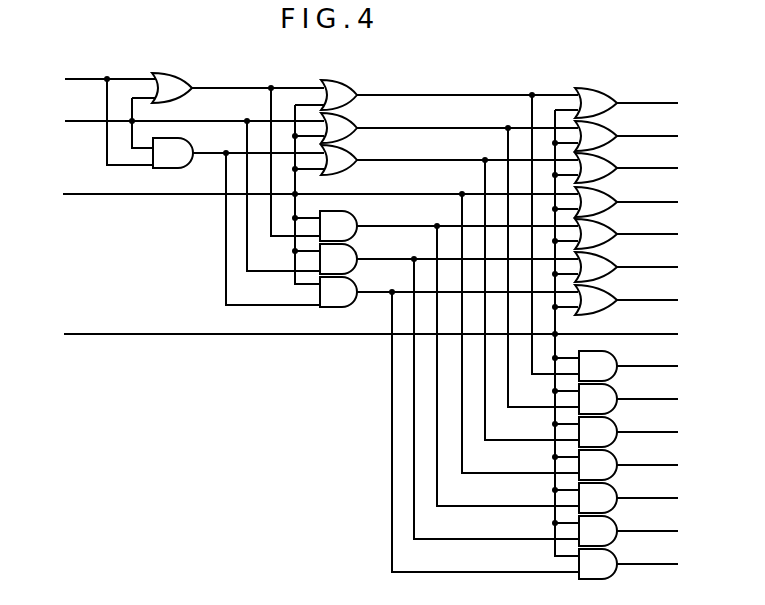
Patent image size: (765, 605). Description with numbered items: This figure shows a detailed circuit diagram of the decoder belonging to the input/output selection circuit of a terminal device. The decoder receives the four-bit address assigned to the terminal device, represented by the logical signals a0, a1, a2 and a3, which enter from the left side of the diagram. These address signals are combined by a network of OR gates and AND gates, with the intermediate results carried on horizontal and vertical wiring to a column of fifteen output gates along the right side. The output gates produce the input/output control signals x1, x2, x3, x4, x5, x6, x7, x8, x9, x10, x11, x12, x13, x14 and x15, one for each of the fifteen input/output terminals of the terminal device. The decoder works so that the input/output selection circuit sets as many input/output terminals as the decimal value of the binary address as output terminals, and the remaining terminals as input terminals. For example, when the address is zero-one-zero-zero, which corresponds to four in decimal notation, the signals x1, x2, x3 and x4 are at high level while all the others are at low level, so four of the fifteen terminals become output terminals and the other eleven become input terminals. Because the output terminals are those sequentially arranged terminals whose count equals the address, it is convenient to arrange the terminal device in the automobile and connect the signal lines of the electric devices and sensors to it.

The logical signal a0 is at (95, 81).
The logical signal a1 is at (180, 123).
The logical signal a2 is at (307, 196).
The logical signal a3 is at (357, 336).
The input/output control signal x1 is at (642, 103).
The input/output control signal x2 is at (642, 136).
The input/output control signal x3 is at (642, 168).
The input/output control signal x4 is at (642, 202).
The input/output control signal x5 is at (642, 234).
The input/output control signal x6 is at (642, 267).
The input/output control signal x7 is at (642, 300).
The input/output control signal x8 is at (654, 334).
The input/output control signal x9 is at (644, 366).
The input/output control signal x10 is at (648, 399).
The input/output control signal x11 is at (648, 432).
The input/output control signal x12 is at (648, 465).
The input/output control signal x13 is at (648, 498).
The input/output control signal x14 is at (648, 531).
The input/output control signal x15 is at (648, 564).